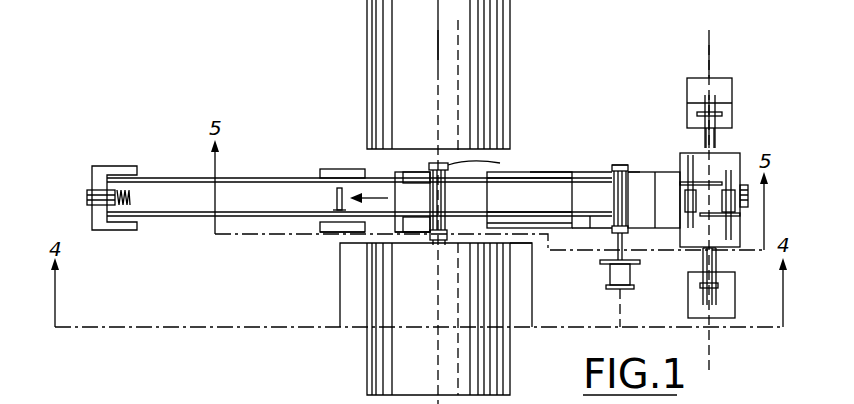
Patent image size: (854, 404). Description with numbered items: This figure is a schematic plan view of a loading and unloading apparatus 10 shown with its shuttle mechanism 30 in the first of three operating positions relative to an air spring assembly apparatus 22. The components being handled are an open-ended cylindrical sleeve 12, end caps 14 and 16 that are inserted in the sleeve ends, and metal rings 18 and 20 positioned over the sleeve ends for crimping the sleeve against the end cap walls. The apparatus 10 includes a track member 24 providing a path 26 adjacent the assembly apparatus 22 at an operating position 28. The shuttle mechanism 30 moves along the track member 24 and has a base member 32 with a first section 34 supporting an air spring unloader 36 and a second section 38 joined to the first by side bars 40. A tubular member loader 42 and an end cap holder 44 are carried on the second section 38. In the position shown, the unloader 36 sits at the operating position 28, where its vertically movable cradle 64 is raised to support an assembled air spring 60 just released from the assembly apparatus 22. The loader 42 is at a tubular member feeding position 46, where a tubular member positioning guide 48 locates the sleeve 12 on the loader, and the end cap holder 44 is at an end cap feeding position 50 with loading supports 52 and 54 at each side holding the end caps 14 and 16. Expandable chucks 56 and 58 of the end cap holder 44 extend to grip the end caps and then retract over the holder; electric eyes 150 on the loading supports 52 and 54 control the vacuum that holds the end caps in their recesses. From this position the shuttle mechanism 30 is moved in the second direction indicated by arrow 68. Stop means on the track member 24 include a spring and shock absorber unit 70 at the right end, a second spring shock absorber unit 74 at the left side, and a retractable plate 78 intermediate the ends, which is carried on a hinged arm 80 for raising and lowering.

The loading and unloading apparatus 10 is at (641, 68).
The open-ended cylindrical sleeve 12 is at (583, 197).
The end cap 14 is at (448, 165).
The end cap 16 is at (440, 245).
The metal ring 18 is at (483, 190).
The metal ring 20 is at (433, 240).
The air spring assembly apparatus 22 is at (490, 38).
The track member 24 is at (150, 178).
The path 26 is at (183, 192).
The operating position 28 is at (437, 40).
The shuttle mechanism 30 is at (462, 243).
The base member 32 is at (538, 173).
The first section 34 is at (405, 192).
The air spring unloader 36 is at (490, 242).
The second section 38 is at (595, 220).
The side bars 40 is at (543, 177).
The tubular member loader 42 is at (640, 166).
The end cap holder 44 is at (742, 158).
The tubular member feeding position 46 is at (614, 162).
The tubular member positioning guide 48 is at (630, 264).
The end cap feeding position 50 is at (710, 53).
The loading support 52 is at (735, 305).
The loading support 54 is at (722, 85).
The expandable chuck 56 is at (702, 157).
The expandable chuck 58 is at (722, 235).
The assembled air spring 60 is at (410, 205).
The vertically movable cradle 64 is at (415, 177).
The arrow indicating second direction 68 is at (353, 210).
The spring and shock absorber unit 70 is at (750, 196).
The second spring shock absorber unit 74 is at (97, 193).
The retractable plate 78 is at (340, 200).
The hinged arm 80 is at (345, 182).
The electric eyes 150 is at (713, 135).